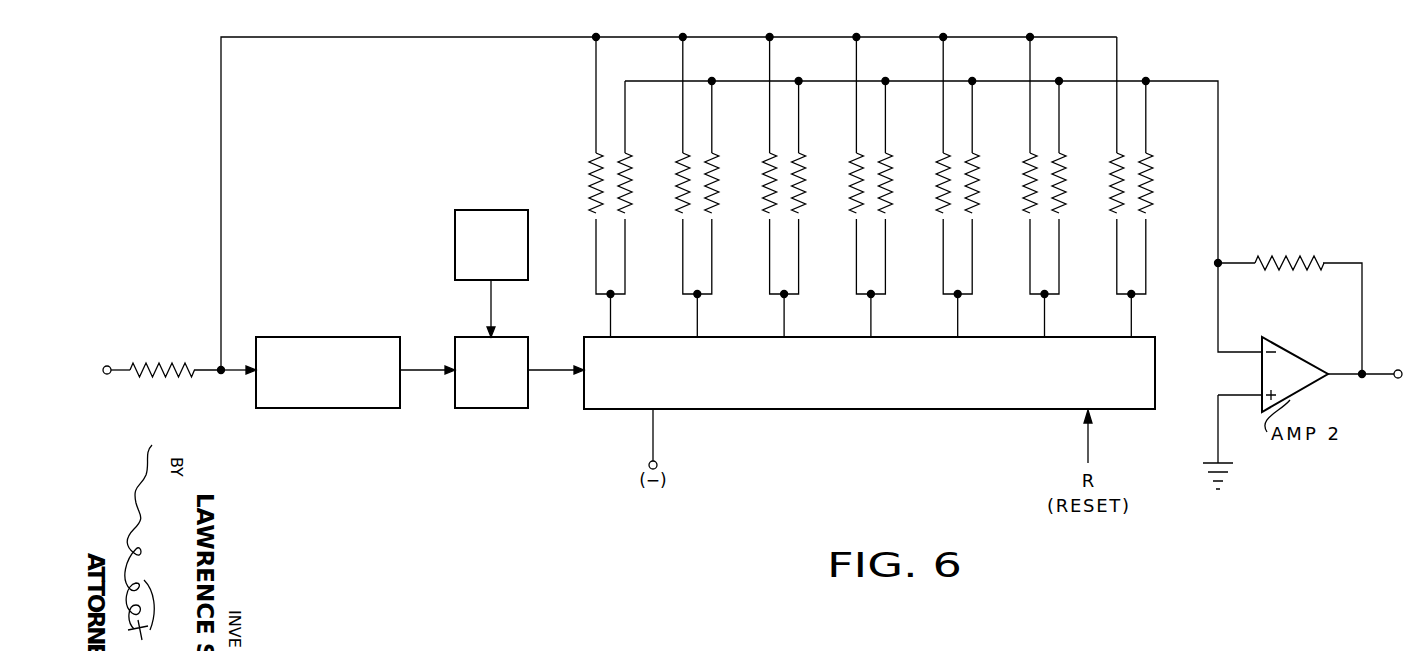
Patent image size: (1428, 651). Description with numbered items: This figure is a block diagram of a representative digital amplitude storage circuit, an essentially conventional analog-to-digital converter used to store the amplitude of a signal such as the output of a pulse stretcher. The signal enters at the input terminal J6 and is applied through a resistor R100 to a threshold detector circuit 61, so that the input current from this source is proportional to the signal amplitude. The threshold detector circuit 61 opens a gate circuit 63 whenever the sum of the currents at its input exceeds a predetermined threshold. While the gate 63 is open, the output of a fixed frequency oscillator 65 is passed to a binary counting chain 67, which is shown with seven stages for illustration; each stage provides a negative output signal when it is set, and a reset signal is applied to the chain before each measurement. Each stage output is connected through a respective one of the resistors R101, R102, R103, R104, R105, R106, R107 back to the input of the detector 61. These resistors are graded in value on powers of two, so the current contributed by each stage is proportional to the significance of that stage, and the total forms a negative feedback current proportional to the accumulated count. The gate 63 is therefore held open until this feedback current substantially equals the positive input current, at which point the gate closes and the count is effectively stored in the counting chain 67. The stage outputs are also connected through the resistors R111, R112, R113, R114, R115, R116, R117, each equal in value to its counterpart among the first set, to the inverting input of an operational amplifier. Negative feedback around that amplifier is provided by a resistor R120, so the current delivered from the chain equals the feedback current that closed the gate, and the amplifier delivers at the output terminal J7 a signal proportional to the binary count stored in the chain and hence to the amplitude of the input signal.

The input jack J6 is at (107, 365).
The resistor R100 is at (165, 374).
The threshold detector circuit 61 is at (345, 409).
The gate circuit 63 is at (490, 409).
The fixed frequency oscillator 65 is at (480, 210).
The binary counting chain 67 is at (860, 410).
The resistor R101 is at (590, 166).
The resistor R102 is at (685, 194).
The resistor R103 is at (772, 194).
The resistor R104 is at (858, 194).
The resistor R105 is at (945, 194).
The resistor R106 is at (1032, 194).
The resistor R107 is at (1119, 194).
The resistor R111 is at (626, 172).
The resistor R112 is at (713, 172).
The resistor R113 is at (800, 172).
The resistor R114 is at (886, 172).
The resistor R115 is at (973, 172).
The resistor R116 is at (1060, 172).
The resistor R117 is at (1147, 172).
The resistor R120 is at (1296, 258).
The output jack J7 is at (1399, 380).